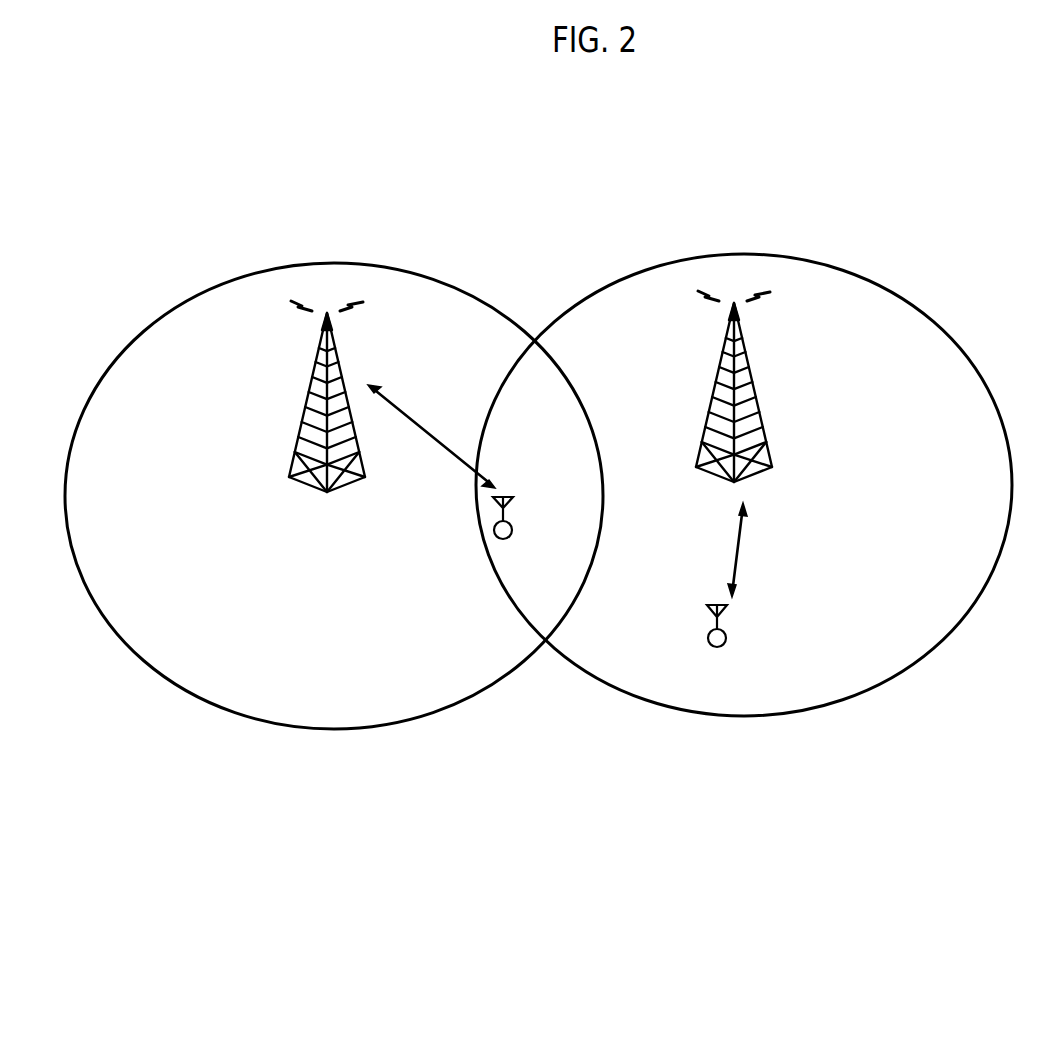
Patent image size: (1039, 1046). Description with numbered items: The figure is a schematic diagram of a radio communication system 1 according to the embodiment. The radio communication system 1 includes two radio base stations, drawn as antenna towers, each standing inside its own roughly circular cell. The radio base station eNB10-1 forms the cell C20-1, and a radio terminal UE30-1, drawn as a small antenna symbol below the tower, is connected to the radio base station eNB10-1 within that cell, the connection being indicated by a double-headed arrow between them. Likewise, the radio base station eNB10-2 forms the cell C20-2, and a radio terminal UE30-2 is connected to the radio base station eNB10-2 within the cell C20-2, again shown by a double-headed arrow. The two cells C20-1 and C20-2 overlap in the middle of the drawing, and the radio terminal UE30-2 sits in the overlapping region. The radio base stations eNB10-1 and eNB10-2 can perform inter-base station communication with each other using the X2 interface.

The radio communication system 1 is at (700, 131).
The cell C20-2 is at (230, 281).
The cell C20-1 is at (640, 268).
The radio base station eNB10-2 is at (307, 383).
The radio base station eNB10-1 is at (815, 345).
The radio terminal UE30-2 is at (494, 531).
The radio terminal UE30-1 is at (726, 637).